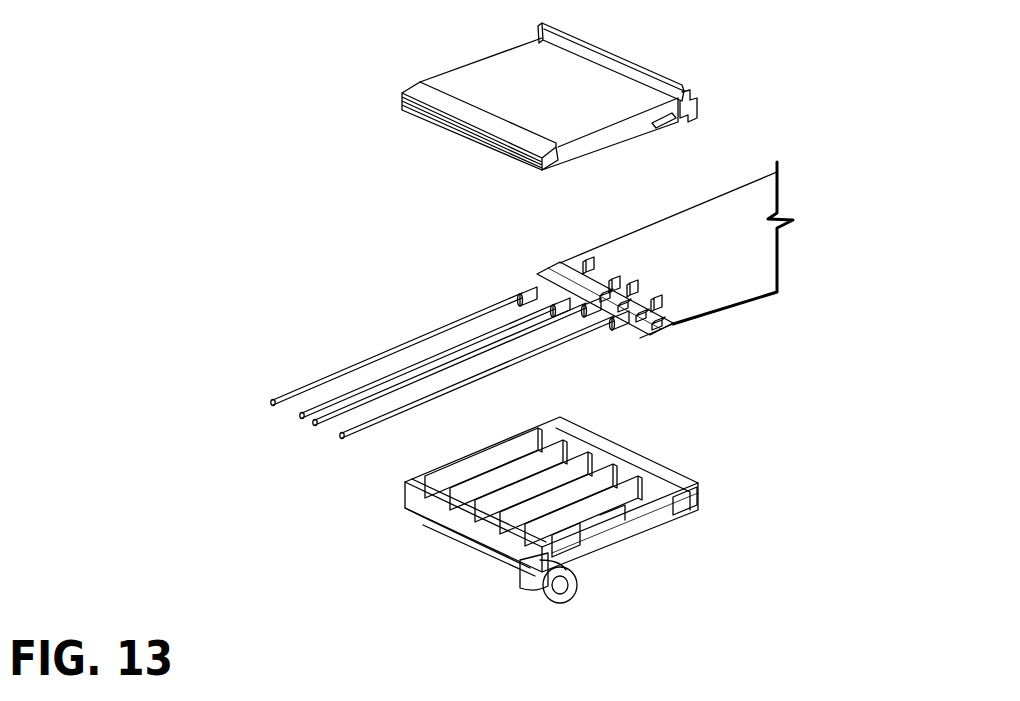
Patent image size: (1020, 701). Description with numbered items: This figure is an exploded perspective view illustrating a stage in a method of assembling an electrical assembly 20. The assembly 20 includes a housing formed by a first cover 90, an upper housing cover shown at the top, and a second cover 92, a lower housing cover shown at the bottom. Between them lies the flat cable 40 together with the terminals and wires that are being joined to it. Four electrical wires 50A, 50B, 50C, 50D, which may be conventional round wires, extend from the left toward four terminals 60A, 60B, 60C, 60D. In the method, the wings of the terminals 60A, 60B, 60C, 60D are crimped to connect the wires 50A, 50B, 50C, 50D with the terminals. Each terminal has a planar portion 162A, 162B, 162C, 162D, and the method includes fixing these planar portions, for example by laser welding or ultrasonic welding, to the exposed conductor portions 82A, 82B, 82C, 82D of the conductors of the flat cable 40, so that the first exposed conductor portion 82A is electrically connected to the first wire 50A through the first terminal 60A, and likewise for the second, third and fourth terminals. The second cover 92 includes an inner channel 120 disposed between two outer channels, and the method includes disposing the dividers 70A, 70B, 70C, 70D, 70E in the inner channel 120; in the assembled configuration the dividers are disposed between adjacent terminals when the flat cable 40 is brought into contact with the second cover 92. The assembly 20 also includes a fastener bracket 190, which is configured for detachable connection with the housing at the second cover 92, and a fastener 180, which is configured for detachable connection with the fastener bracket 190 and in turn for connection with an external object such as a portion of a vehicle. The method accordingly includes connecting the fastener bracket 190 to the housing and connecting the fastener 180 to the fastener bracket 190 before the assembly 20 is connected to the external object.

The electrical assembly 20 is at (224, 156).
The flat cable 40 is at (750, 236).
The first wire 50A is at (342, 437).
The second wire 50B is at (313, 424).
The third wire 50C is at (300, 412).
The fourth wire 50D is at (270, 397).
The first terminal 60A is at (660, 299).
The second terminal 60B is at (650, 295).
The third terminal 60C is at (620, 285).
The fourth terminal 60D is at (589, 262).
The divider 70A is at (652, 487).
The divider 70B is at (640, 480).
The divider 70C is at (610, 467).
The divider 70D is at (592, 457).
The divider 70E is at (570, 440).
The first exposed conductor portion 82A is at (605, 333).
The second exposed conductor portion 82B is at (575, 325).
The third exposed conductor portion 82C is at (540, 292).
The fourth exposed conductor portion 82D is at (576, 283).
The first cover 90 is at (498, 80).
The second cover 92 is at (700, 494).
The inner channel 120 is at (626, 531).
The planar portion 162A is at (668, 308).
The planar portion 162B is at (665, 290).
The planar portion 162C is at (607, 280).
The planar portion 162D is at (615, 280).
The fastener 180 is at (575, 580).
The fastener bracket 190 is at (667, 515).